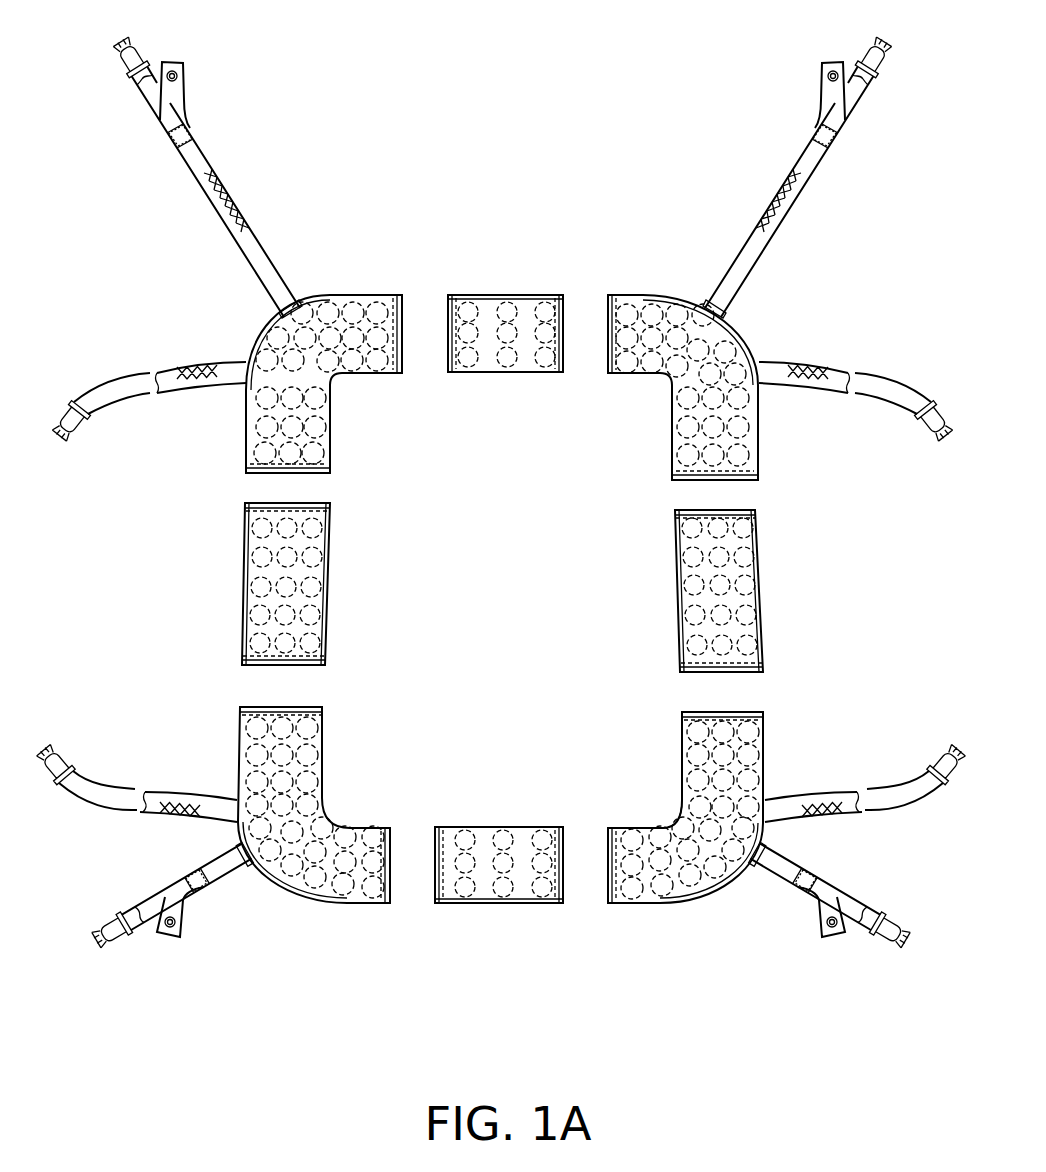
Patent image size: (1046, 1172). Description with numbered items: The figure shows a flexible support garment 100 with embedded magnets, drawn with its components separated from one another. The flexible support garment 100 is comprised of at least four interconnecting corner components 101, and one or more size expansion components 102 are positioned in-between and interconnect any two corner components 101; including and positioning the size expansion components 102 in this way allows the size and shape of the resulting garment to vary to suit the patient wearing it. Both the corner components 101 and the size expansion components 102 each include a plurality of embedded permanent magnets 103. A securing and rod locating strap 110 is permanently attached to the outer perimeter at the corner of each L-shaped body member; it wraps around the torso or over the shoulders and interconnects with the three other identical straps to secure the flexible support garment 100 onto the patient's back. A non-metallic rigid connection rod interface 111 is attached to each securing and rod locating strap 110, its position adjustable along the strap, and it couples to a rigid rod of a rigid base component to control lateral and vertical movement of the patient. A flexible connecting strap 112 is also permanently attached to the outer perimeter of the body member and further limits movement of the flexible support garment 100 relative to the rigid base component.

The flexible support garment 100 is at (541, 147).
The corner component 101 is at (355, 295).
The size expansion component 102 is at (497, 293).
The embedded permanent magnet 103 is at (676, 822).
The securing and rod locating strap 110 is at (202, 177).
The non-metallic rigid connection rod interface 111 is at (173, 87).
The flexible connecting strap 112 is at (122, 385).